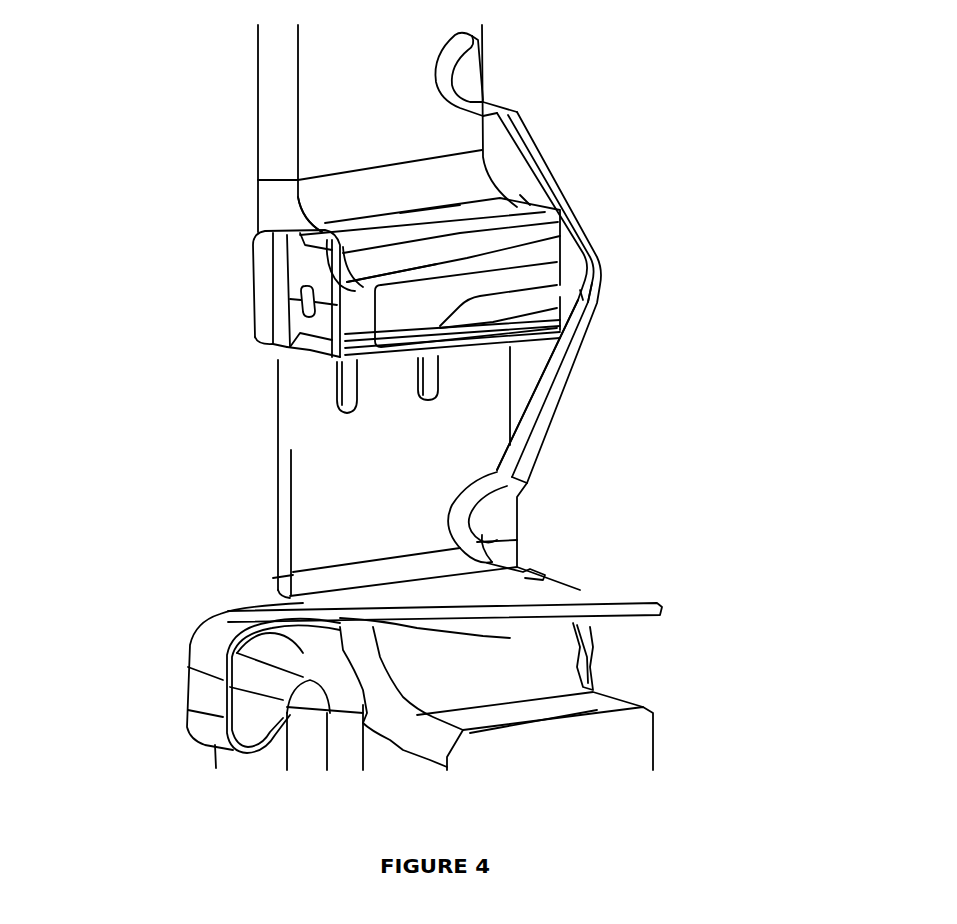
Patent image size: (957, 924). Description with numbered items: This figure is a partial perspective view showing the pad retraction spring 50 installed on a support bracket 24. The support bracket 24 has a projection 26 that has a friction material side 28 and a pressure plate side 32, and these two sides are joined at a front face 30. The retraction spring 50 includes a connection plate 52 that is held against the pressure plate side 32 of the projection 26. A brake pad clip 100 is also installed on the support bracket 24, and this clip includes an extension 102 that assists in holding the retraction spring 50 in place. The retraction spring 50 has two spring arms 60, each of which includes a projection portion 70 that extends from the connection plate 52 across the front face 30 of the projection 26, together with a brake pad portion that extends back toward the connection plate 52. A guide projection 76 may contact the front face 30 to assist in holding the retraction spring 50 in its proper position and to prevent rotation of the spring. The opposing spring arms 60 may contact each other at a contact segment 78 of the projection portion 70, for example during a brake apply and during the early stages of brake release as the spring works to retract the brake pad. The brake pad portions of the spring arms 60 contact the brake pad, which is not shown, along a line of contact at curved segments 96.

The support bracket 24 is at (333, 73).
The projection 26 is at (440, 213).
The friction material side 28 is at (515, 200).
The front face 30 is at (523, 262).
The pressure plate side 32 is at (325, 245).
The retraction spring 50 is at (616, 292).
The connection plate 52 is at (262, 246).
The spring arms 60 is at (553, 165).
The projection portion 70 is at (465, 262).
The guide projection 76 is at (470, 307).
The contact segment 78 is at (600, 307).
The curved segments 96 is at (440, 67).
The brake pad clip 100 is at (343, 493).
The extension 102 is at (300, 333).